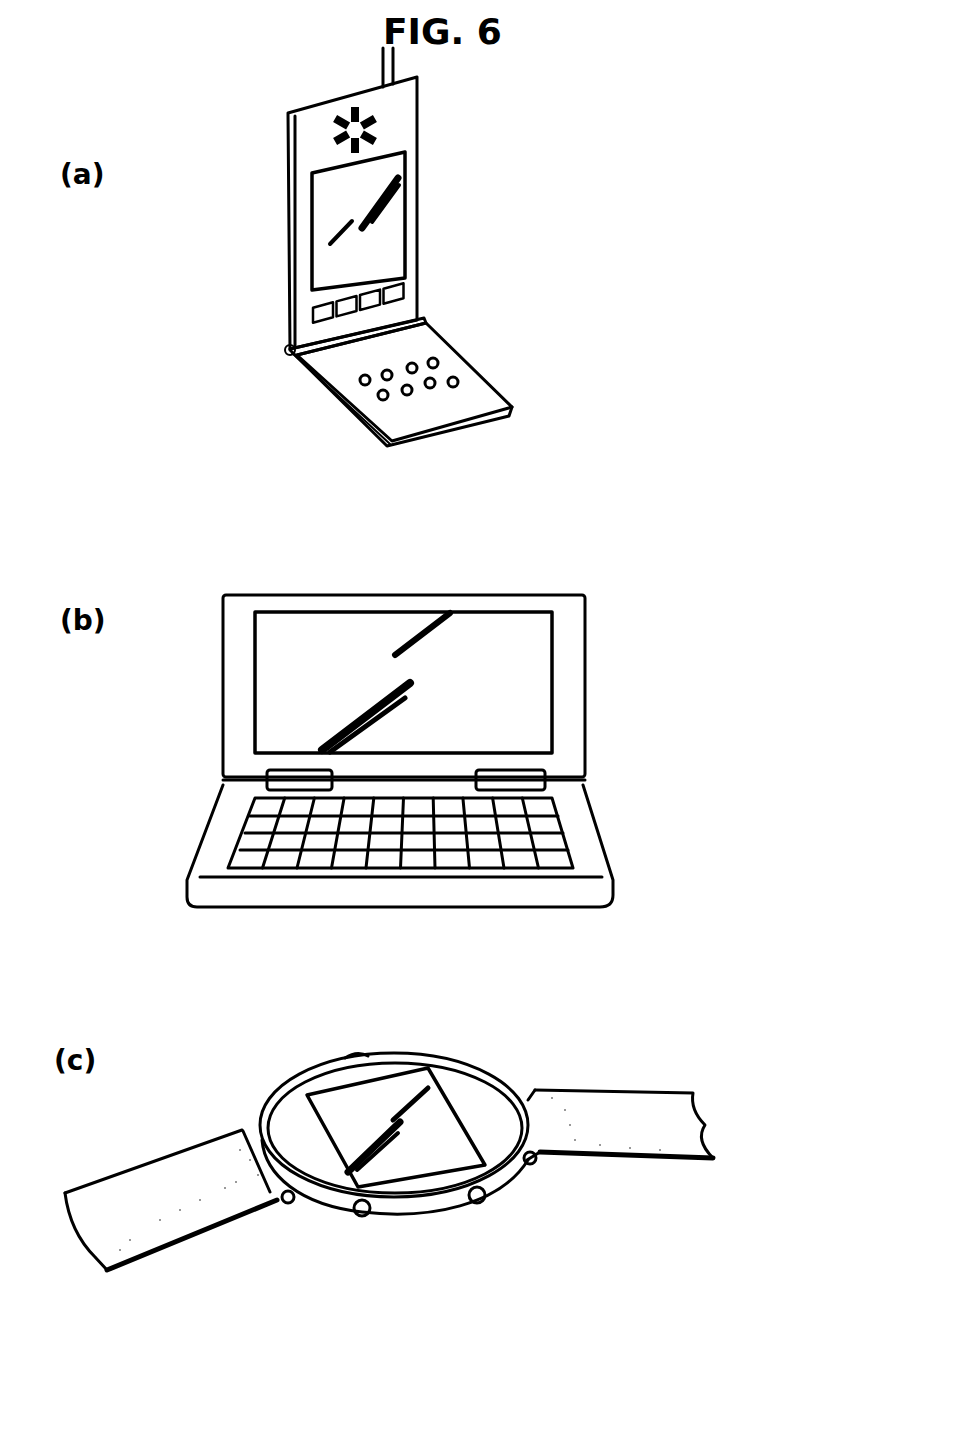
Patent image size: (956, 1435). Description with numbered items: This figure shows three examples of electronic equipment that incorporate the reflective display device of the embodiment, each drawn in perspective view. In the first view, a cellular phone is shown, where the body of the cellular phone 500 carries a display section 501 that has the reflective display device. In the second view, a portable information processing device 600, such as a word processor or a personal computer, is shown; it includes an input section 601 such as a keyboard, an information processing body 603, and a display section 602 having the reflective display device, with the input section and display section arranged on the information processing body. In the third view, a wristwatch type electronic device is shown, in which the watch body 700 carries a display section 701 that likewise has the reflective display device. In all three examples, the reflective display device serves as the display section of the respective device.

The body of the cellular phone 500 is at (450, 143).
The display section 501 is at (388, 236).
The information processing device 600 is at (603, 642).
The input section 601 is at (260, 834).
The display section 602 is at (530, 708).
The information processing body 603 is at (580, 888).
The watch body 700 is at (440, 1060).
The display section 701 is at (440, 1130).